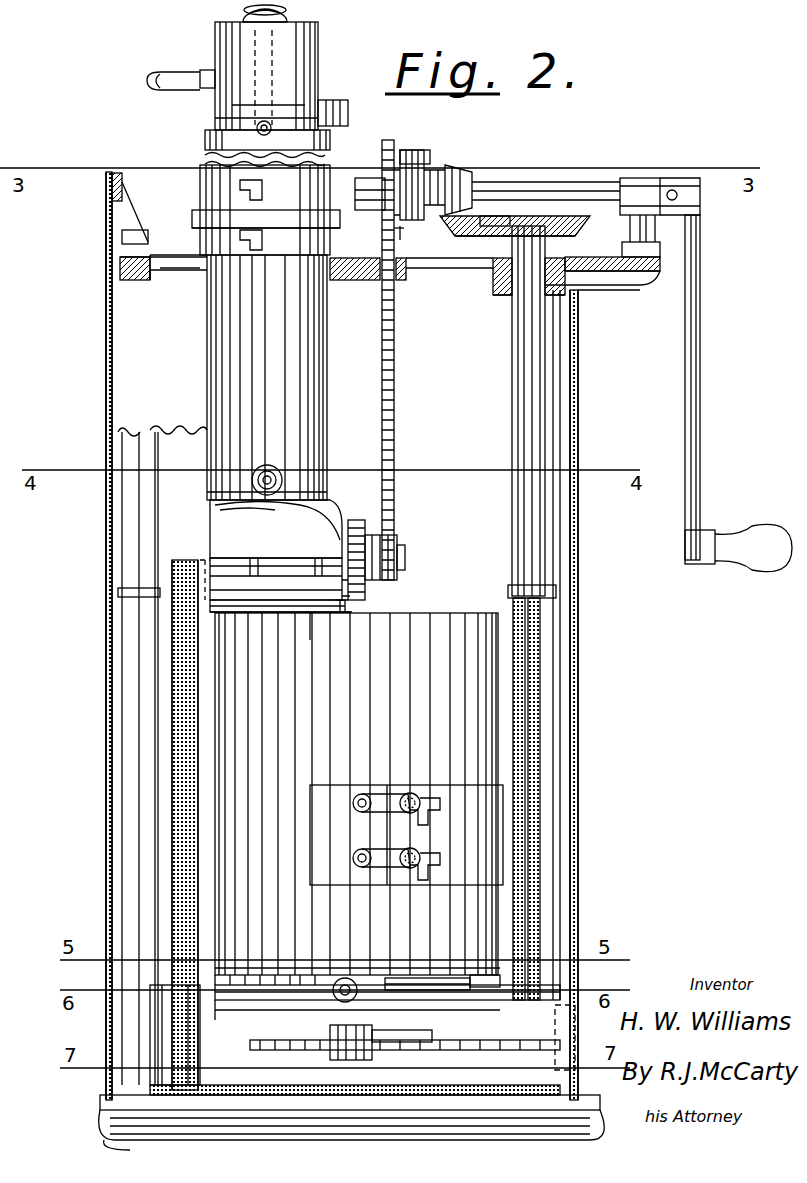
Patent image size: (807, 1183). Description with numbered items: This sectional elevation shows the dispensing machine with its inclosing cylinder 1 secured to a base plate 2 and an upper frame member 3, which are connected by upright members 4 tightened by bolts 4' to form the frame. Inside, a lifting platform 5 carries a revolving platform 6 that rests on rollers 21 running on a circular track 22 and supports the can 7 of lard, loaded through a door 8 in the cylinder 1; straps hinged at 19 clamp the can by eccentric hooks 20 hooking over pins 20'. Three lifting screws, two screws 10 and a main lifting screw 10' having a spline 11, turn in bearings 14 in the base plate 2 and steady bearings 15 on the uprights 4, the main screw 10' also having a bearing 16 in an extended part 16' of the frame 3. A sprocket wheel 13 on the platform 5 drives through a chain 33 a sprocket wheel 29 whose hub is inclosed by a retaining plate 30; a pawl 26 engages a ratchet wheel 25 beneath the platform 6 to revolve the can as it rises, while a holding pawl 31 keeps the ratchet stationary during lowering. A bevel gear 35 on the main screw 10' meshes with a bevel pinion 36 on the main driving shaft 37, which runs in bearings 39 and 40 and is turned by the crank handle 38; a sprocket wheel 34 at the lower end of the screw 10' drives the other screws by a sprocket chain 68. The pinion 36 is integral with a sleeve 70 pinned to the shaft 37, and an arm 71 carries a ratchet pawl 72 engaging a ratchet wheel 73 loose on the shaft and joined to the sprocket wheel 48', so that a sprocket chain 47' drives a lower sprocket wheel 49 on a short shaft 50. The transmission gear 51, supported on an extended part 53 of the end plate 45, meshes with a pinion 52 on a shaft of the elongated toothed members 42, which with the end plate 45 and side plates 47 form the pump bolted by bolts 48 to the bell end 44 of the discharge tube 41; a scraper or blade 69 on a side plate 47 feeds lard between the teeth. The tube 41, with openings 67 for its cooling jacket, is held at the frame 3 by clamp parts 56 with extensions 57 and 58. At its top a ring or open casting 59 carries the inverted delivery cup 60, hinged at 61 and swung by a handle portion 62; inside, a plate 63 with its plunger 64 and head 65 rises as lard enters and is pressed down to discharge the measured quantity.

The inclosing cylinder 1 is at (106, 212).
The base plate 2 is at (352, 1118).
The upper frame member 3 is at (122, 190).
The upright members 4 is at (335, 752).
The bolts 4' is at (100, 246).
The lifting platform 5 is at (240, 975).
The revolving platform 6 is at (325, 975).
The can or container 7 is at (357, 794).
The door 8 is at (446, 170).
The lifting screws 10 is at (128, 825).
The main lifting screw 10' is at (570, 411).
The spline 11 is at (525, 690).
The sprocket wheel 13 is at (575, 1030).
The bearings 14 is at (100, 1146).
The steady bearings 15 is at (556, 584).
The bearing 16 is at (342, 293).
The extended part 16' is at (602, 273).
The hinge 19 is at (406, 835).
The eccentric hooks 20 is at (391, 789).
The pins 20' is at (387, 846).
The rollers 21 is at (348, 978).
The track 22 is at (282, 985).
The ratchet wheel 25 is at (400, 978).
The pawl 26 is at (275, 1010).
The sprocket wheel 29 is at (300, 1045).
The retaining plate 30 is at (372, 1047).
The holding pawl 31 is at (475, 975).
The chain 33 is at (415, 1049).
The sprocket wheels 34 is at (150, 1080).
The bevel gear 35 is at (486, 230).
The bevel pinion 36 is at (462, 168).
The main driving shaft 37 is at (548, 182).
The crank handle 38 is at (696, 388).
The bearing 39 is at (640, 178).
The bearing 40 is at (362, 180).
The discharge tube 41 is at (230, 368).
The elongated toothed members 42 is at (305, 612).
The bell end 44 is at (276, 529).
The end plate 45 is at (355, 608).
The side plates 47 is at (352, 624).
The sprocket chain 47' is at (410, 360).
The bolts 48 is at (191, 550).
The sprocket wheel 48' is at (384, 165).
The lower sprocket wheel 49 is at (398, 565).
The short shaft 50 is at (405, 552).
The transmission gear 51 is at (357, 520).
The pinion 52 is at (350, 590).
The extended part 53 is at (332, 548).
The clamp parts 56 is at (240, 240).
The extension 57 is at (322, 270).
The extension 58 is at (200, 262).
The ring or open casting 59 is at (205, 141).
The delivery cup 60 is at (215, 52).
The hinge 61 is at (336, 100).
The handle portion 62 is at (147, 80).
The plate 63 is at (236, 105).
The plunger 64 is at (256, 42).
The head 65 is at (287, 12).
The openings 67 is at (266, 465).
The sprocket chain 68 is at (290, 1090).
The scraper or blade 69 is at (312, 640).
The sleeve 70 is at (405, 242).
The arm 71 is at (430, 158).
The ratchet pawl 72 is at (410, 150).
The ratchet wheel 73 is at (402, 240).